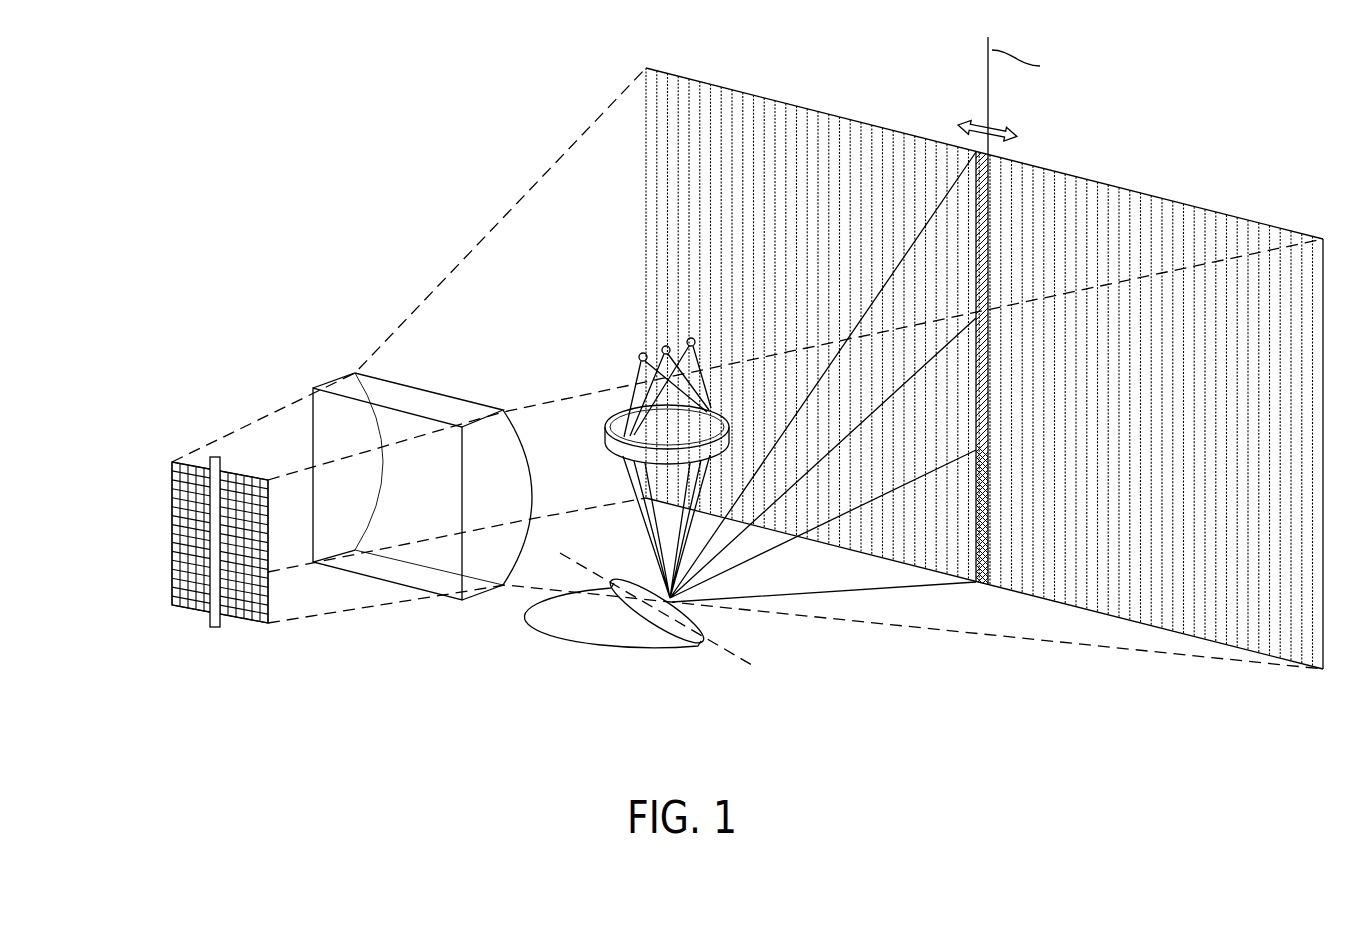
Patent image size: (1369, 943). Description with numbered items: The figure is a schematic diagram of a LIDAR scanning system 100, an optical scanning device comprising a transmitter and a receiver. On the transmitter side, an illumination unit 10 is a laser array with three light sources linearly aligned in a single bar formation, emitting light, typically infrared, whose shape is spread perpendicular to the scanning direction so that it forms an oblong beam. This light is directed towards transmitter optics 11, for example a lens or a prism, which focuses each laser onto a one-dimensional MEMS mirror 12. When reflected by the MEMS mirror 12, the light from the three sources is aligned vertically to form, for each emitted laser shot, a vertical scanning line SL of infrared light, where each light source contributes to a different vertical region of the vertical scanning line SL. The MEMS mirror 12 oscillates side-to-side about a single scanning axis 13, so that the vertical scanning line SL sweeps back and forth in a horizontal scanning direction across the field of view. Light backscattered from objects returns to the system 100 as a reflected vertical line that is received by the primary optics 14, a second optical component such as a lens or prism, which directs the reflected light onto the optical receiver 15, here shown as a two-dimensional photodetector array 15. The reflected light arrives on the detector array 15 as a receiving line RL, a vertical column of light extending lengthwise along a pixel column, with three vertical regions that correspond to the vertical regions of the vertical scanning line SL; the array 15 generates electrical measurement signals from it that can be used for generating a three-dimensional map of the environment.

The LIDAR scanning system 100 is at (240, 128).
The illumination unit 10 is at (628, 334).
The transmitter optics 11 is at (607, 432).
The MEMS mirror 12 is at (702, 625).
The scanning axis 13 is at (722, 650).
The primary optics 14 is at (427, 400).
The optical receiver 15 is at (181, 460).
The vertical scanning line SL is at (977, 152).
The receiving line RL is at (206, 643).